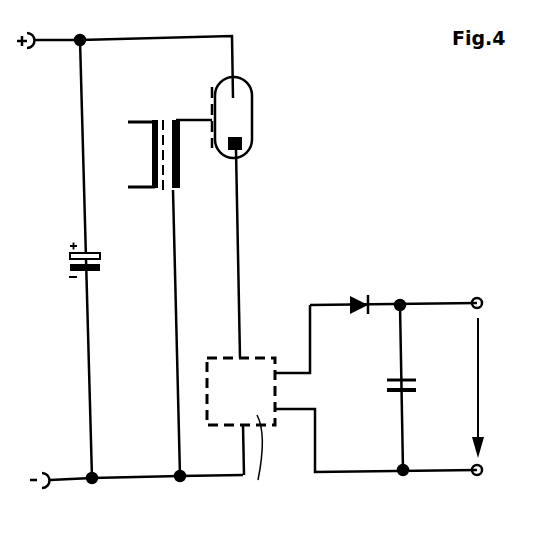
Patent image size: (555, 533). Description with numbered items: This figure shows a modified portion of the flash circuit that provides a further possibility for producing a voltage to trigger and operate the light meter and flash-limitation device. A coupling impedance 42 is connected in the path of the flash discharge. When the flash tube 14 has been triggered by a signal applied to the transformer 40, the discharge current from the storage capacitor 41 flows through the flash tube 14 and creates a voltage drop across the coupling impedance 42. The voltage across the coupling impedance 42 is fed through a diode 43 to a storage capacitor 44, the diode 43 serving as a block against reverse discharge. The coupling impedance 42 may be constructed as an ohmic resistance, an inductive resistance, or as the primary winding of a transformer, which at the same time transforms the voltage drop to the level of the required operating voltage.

The flash tube 14 is at (253, 133).
The transformer 40 is at (171, 111).
The storage capacitor 41 is at (97, 270).
The coupling impedance 42 is at (253, 405).
The diode 43 is at (367, 303).
The storage capacitor 44 is at (416, 392).